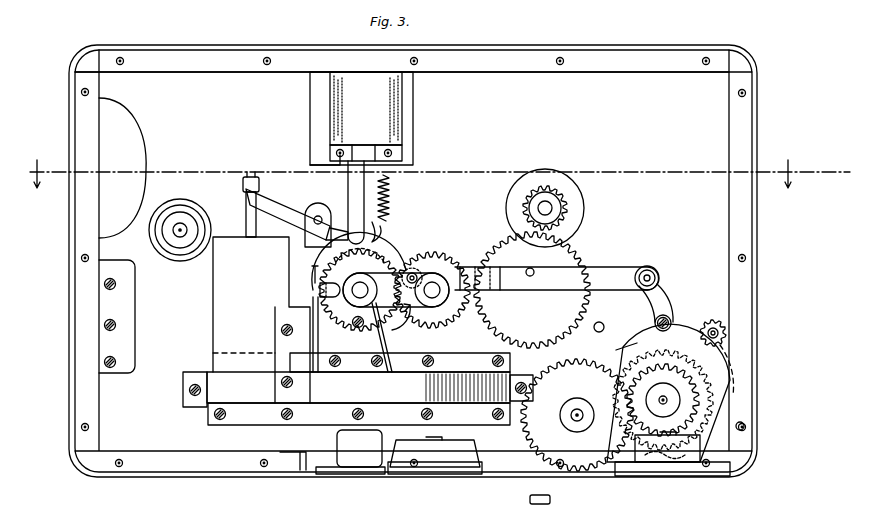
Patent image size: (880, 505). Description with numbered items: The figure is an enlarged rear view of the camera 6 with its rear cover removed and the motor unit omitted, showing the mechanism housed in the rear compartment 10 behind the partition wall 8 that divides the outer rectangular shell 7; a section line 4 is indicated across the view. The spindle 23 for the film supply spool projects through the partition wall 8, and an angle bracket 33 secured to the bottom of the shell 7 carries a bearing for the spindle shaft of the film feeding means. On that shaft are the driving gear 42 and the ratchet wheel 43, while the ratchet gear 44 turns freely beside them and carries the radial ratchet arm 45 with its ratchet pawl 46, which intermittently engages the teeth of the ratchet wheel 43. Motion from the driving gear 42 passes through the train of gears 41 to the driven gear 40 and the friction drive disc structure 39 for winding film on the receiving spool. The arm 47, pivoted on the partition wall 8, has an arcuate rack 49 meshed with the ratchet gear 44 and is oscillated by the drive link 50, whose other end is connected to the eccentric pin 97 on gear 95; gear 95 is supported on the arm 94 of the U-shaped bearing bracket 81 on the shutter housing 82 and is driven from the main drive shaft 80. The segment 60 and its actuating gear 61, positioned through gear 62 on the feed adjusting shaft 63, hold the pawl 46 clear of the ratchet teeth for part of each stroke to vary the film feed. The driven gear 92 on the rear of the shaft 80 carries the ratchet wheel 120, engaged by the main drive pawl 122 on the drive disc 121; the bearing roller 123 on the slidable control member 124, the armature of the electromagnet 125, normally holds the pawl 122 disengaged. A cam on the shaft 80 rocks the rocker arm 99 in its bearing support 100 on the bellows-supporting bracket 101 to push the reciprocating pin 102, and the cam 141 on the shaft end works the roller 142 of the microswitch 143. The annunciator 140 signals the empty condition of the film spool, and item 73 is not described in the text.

The section line 4 is at (440, 164).
The camera 6 is at (207, 50).
The outer rectangular shell 7 is at (338, 46).
The partition wall 8 is at (532, 98).
The rear compartment 10 is at (717, 131).
The spindle 23 is at (180, 223).
The angle bracket 33 is at (630, 452).
The friction drive disc structure 39 is at (575, 222).
The driven gear 40 is at (562, 200).
The train of gears 41 is at (563, 332).
The driving gear 42 is at (706, 405).
The ratchet wheel 43 is at (745, 426).
The ratchet gear 44 is at (700, 394).
The ratchet arm 45 is at (715, 352).
The ratchet pawl 46 is at (703, 330).
The arm 47 is at (661, 293).
The arcuate rack 49 is at (733, 360).
The drive link 50 is at (594, 272).
The segment 60 is at (675, 311).
The actuating gear 61 is at (703, 407).
The gear 62 is at (526, 432).
The feed adjusting shaft 63 is at (577, 420).
The bracket 73 is at (360, 503).
The main drive shaft 80 is at (369, 288).
The U-shaped bearing bracket 81 is at (376, 337).
The shutter housing 82 is at (456, 372).
The driven gear 92 is at (395, 250).
The arm 94 is at (401, 322).
The gear 95 is at (452, 262).
The eccentric pin 97 is at (420, 269).
The rocker arm 99 is at (281, 201).
The bearing support 100 is at (319, 212).
The bellows-supporting bracket 101 is at (222, 296).
The reciprocating pin 102 is at (246, 213).
The ratchet wheel 120 is at (332, 263).
The drive disc 121 is at (312, 290).
The main drive pawl 122 is at (313, 277).
The bearing roller 123 is at (378, 238).
The slidable control member 124 is at (387, 216).
The electromagnet 125 is at (396, 112).
The annunciator 140 is at (146, 292).
The cam 141 is at (420, 300).
The roller 142 is at (325, 300).
The microswitch 143 is at (281, 333).